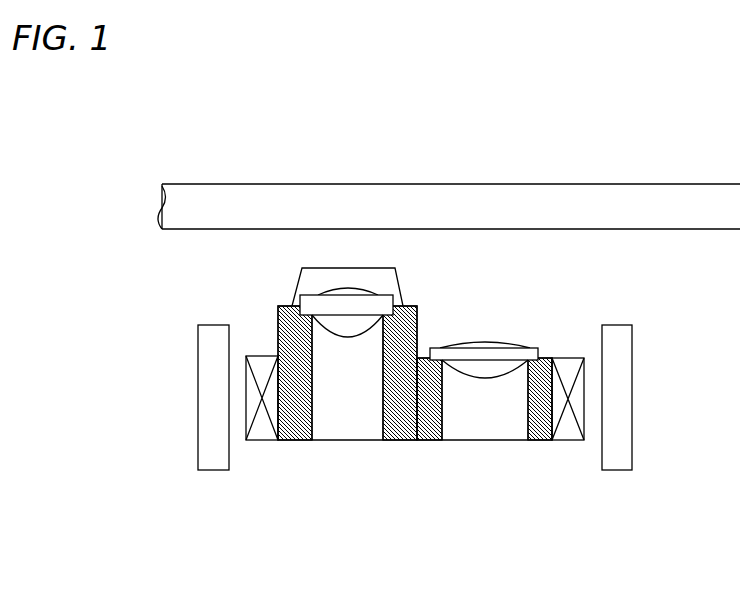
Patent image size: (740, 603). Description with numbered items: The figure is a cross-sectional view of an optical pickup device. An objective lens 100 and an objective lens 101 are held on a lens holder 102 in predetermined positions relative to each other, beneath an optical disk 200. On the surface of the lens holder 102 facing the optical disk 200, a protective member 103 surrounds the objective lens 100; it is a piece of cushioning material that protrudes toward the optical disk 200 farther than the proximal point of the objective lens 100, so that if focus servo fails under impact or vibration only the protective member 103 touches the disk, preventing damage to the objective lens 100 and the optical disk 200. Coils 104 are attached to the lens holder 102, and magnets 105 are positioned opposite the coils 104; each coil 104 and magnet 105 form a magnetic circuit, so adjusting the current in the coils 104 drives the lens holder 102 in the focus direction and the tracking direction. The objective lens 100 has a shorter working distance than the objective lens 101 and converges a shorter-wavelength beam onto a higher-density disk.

The optical disk 200 is at (490, 202).
The objective lens 100 is at (347, 302).
The objective lens 101 is at (487, 360).
The lens holder 102 is at (424, 356).
The protective member 103 is at (312, 282).
The coils 104 is at (262, 432).
The magnets 105 is at (218, 450).